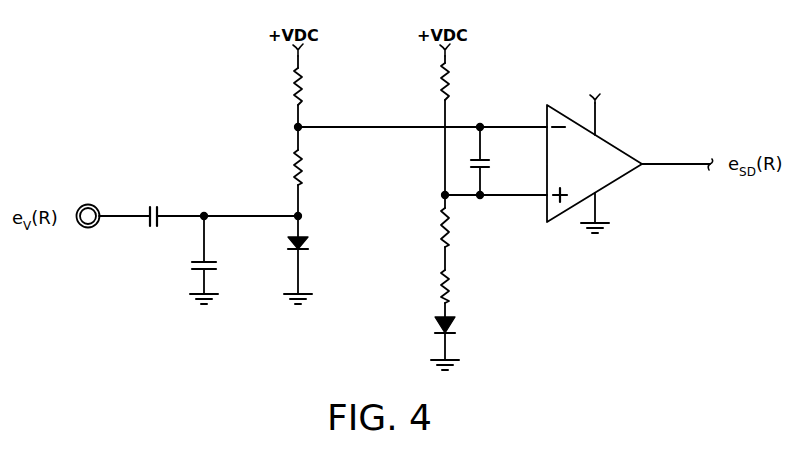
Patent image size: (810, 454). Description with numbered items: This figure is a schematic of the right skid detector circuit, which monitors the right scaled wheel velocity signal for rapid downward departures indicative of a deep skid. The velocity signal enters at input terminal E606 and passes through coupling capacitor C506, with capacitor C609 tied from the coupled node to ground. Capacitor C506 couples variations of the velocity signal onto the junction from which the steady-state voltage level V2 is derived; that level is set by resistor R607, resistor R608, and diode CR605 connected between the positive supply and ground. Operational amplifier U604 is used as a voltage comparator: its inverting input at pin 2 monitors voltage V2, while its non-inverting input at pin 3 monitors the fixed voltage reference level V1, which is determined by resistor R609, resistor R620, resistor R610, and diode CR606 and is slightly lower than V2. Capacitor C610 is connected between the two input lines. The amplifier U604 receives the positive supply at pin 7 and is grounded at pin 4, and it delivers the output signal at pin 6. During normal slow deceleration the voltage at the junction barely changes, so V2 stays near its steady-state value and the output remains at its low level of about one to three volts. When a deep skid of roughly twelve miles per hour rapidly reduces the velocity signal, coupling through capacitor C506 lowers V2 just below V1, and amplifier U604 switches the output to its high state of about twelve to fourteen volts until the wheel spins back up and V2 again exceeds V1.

The input terminal E606 is at (84, 205).
The coupling capacitor C506 is at (162, 204).
The capacitor C609 is at (178, 260).
The resistor R607 is at (322, 86).
The resistor R608 is at (322, 167).
The diode CR605 is at (326, 269).
The resistor R609 is at (472, 81).
The capacitor C610 is at (505, 161).
The resistor R620 is at (472, 227).
The resistor R610 is at (472, 286).
The diode CR606 is at (476, 343).
The operational amplifier U604 is at (594, 163).
The fixed voltage reference level V1 is at (483, 196).
The steady-state voltage level V2 is at (405, 128).
The inverting input pin 2 is at (533, 118).
The non-inverting input pin 3 is at (534, 208).
The ground pin 4 is at (596, 211).
The output pin 6 is at (677, 156).
The supply pin 7 is at (595, 110).